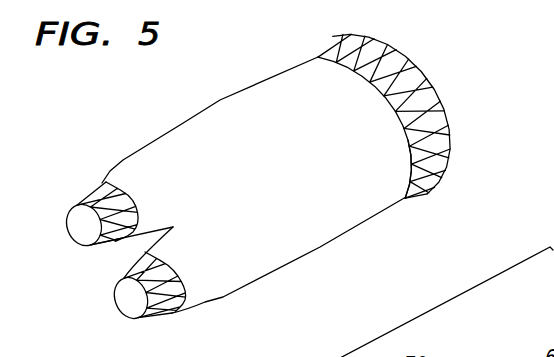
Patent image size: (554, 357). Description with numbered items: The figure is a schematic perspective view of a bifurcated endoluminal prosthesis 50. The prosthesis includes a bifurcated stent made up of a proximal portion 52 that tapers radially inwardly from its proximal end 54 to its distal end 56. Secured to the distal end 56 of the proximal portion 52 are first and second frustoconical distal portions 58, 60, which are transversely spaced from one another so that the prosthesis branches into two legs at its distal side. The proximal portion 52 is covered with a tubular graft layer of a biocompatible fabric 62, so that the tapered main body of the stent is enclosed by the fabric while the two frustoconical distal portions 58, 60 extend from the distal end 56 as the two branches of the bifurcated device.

The bifurcated endoluminal prosthesis 50 is at (214, 90).
The proximal portion 52 is at (428, 188).
The proximal end 54 is at (443, 99).
The distal end 56 is at (137, 177).
The first frustoconical distal portion 58 is at (74, 237).
The second frustoconical distal portion 60 is at (177, 308).
The tubular graft layer of biocompatible fabric 62 is at (318, 247).